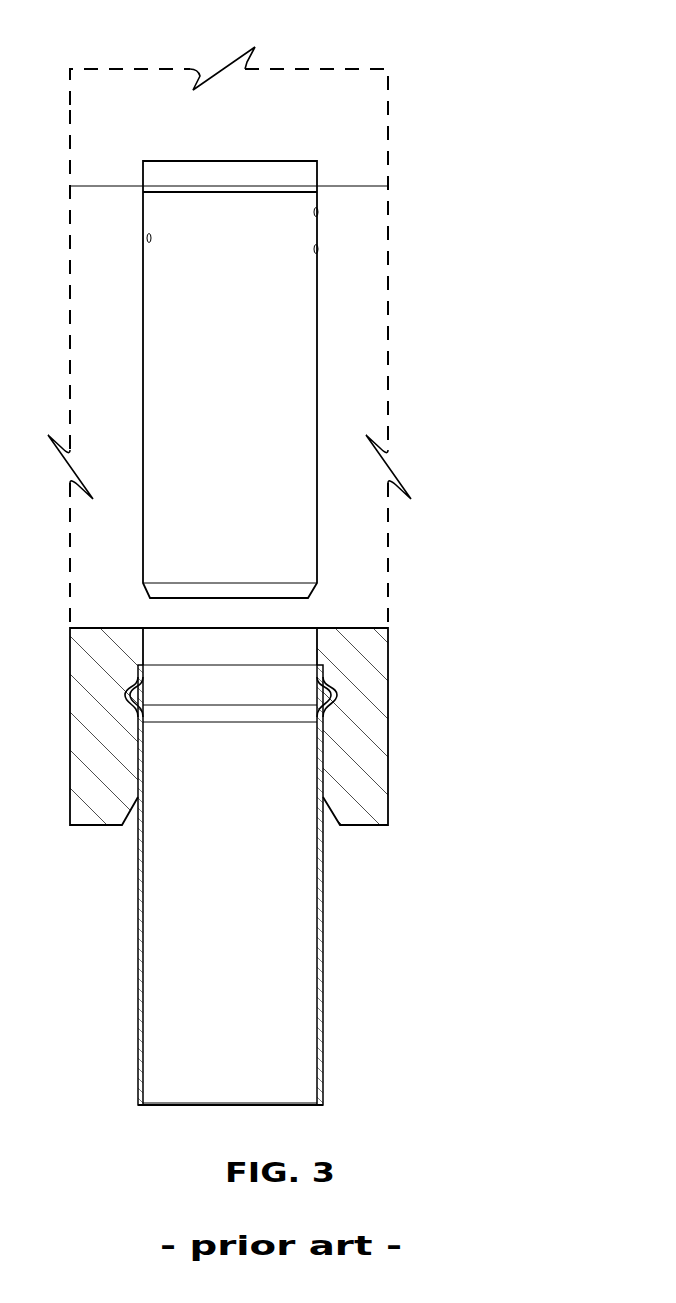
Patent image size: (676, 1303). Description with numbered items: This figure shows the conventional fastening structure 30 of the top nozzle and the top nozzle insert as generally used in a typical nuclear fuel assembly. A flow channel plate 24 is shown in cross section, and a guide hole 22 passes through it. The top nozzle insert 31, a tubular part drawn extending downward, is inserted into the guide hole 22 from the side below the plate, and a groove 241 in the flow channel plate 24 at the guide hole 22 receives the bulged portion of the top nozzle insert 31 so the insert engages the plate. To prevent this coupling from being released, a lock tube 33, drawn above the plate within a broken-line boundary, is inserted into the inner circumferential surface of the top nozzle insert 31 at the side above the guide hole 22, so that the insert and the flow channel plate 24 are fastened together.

The fastening structure 30 is at (412, 145).
The lock tube 33 is at (308, 323).
The guide hole 22 is at (245, 643).
The groove 241 is at (337, 695).
The flow channel plate 24 is at (375, 790).
The top nozzle insert 31 is at (322, 957).